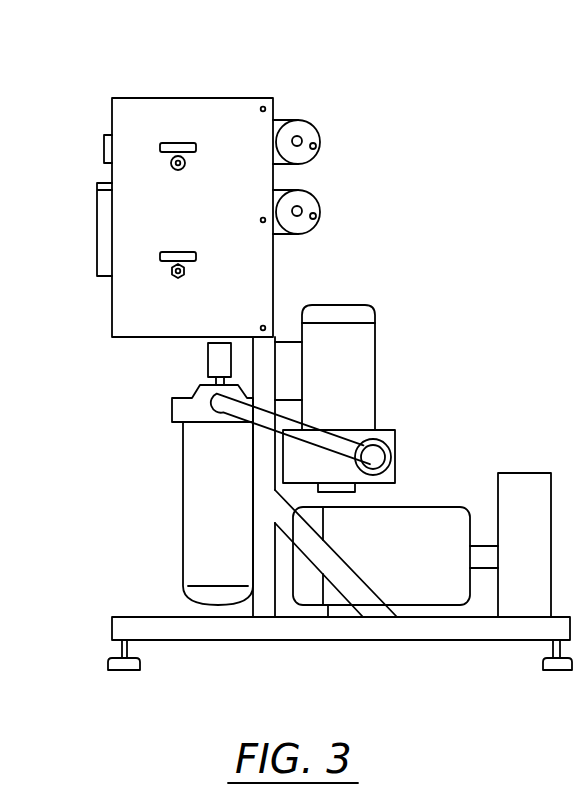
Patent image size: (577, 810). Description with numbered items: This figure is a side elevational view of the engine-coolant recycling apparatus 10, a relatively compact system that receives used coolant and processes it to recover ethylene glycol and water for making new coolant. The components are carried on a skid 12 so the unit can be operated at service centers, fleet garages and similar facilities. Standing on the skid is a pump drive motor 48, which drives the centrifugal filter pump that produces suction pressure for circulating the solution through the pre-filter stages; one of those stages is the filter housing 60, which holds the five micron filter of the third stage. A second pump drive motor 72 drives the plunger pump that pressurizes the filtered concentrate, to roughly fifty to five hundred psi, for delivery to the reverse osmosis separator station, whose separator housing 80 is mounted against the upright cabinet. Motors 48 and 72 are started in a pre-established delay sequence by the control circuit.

The apparatus 10 is at (436, 140).
The skid 12 is at (416, 640).
The pump drive motor 48 is at (375, 340).
The filter housing 60 is at (183, 502).
The pump drive motor 72 is at (413, 508).
The separator housing 80 is at (319, 192).